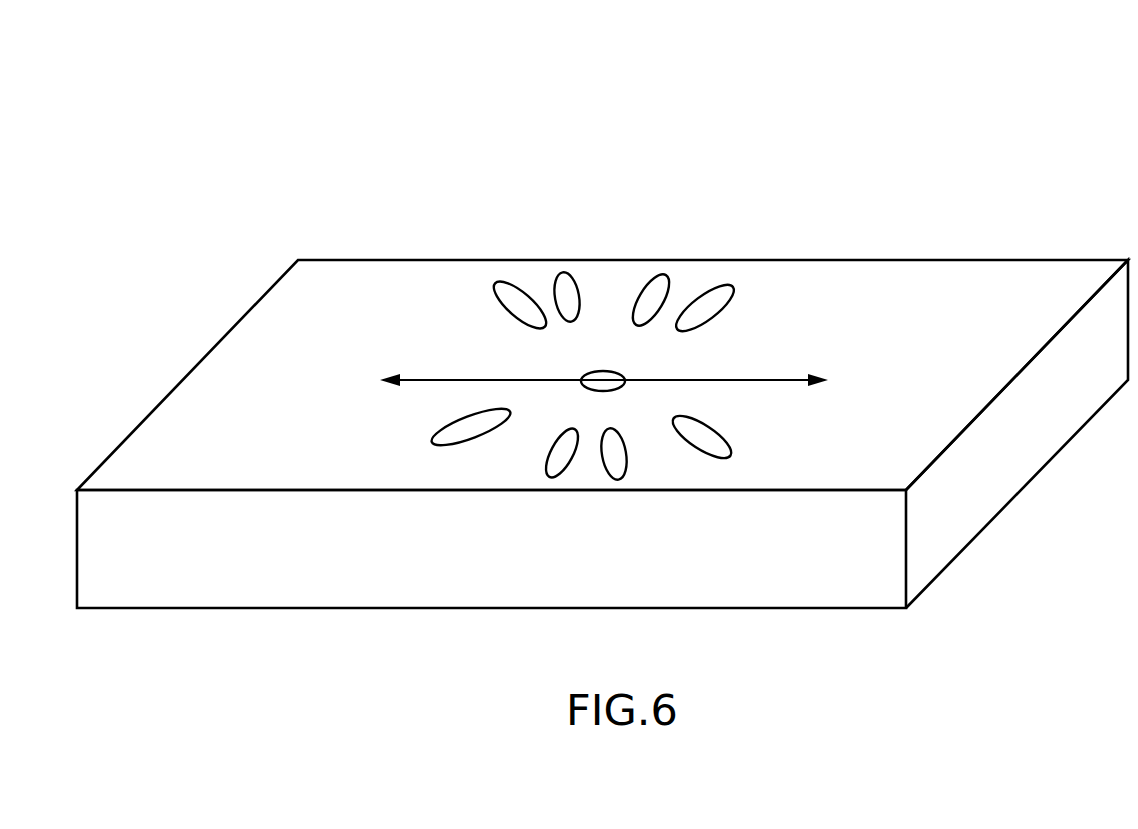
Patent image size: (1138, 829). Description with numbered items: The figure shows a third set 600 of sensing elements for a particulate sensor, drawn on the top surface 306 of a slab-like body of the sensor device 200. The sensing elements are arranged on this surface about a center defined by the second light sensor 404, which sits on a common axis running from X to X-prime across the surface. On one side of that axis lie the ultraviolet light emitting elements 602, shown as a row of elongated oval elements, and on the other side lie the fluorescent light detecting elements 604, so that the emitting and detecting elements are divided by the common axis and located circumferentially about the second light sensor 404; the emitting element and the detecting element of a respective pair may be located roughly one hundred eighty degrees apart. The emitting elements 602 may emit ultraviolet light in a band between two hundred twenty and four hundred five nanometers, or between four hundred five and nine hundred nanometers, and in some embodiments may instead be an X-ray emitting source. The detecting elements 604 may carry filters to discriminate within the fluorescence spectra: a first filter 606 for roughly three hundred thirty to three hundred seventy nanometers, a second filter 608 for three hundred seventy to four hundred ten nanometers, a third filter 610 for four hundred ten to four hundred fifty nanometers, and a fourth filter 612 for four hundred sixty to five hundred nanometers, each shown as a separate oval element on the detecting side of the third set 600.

The substrate device 200 is at (962, 98).
The third set 600 is at (692, 210).
The top surface 306 is at (1033, 272).
The second light sensor 404 is at (620, 373).
The ultraviolet light emitting elements 602 is at (778, 302).
The fluorescent light detecting elements 604 is at (776, 446).
The first filter 606 is at (428, 440).
The second filter 608 is at (547, 478).
The third filter 610 is at (625, 470).
The fourth filter 612 is at (733, 455).